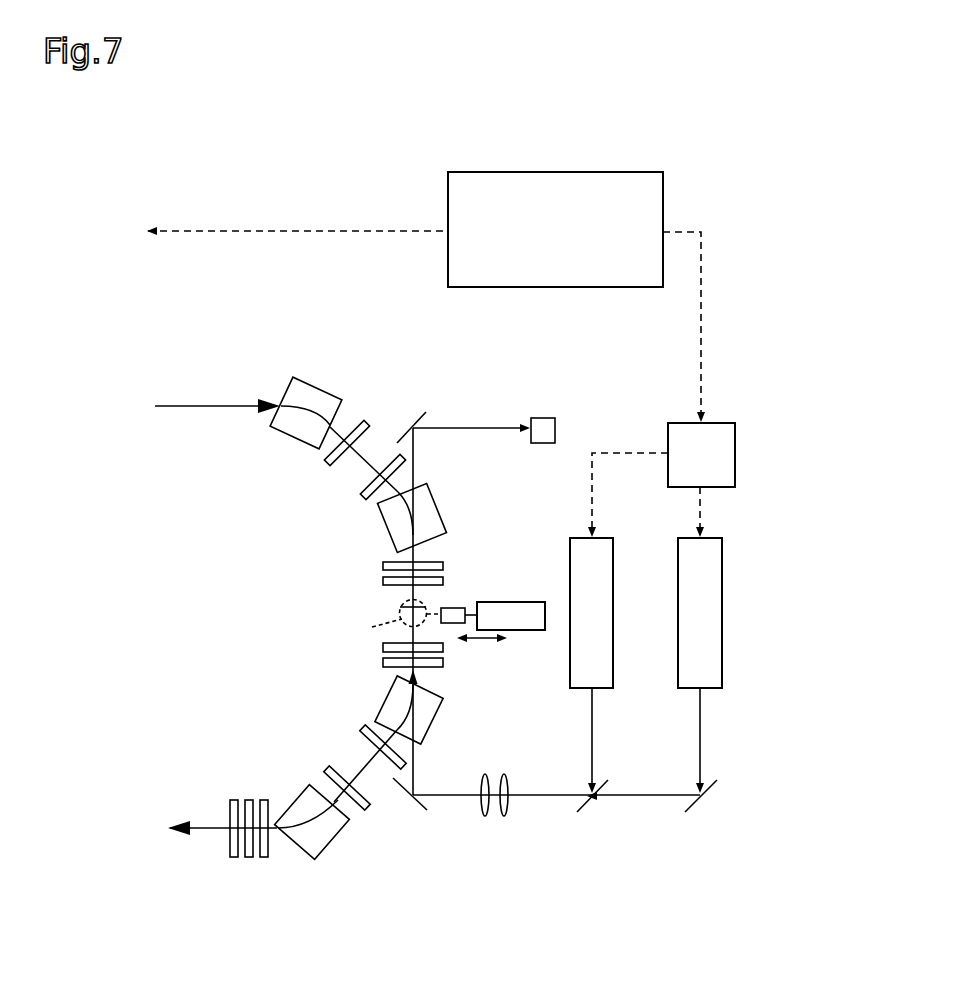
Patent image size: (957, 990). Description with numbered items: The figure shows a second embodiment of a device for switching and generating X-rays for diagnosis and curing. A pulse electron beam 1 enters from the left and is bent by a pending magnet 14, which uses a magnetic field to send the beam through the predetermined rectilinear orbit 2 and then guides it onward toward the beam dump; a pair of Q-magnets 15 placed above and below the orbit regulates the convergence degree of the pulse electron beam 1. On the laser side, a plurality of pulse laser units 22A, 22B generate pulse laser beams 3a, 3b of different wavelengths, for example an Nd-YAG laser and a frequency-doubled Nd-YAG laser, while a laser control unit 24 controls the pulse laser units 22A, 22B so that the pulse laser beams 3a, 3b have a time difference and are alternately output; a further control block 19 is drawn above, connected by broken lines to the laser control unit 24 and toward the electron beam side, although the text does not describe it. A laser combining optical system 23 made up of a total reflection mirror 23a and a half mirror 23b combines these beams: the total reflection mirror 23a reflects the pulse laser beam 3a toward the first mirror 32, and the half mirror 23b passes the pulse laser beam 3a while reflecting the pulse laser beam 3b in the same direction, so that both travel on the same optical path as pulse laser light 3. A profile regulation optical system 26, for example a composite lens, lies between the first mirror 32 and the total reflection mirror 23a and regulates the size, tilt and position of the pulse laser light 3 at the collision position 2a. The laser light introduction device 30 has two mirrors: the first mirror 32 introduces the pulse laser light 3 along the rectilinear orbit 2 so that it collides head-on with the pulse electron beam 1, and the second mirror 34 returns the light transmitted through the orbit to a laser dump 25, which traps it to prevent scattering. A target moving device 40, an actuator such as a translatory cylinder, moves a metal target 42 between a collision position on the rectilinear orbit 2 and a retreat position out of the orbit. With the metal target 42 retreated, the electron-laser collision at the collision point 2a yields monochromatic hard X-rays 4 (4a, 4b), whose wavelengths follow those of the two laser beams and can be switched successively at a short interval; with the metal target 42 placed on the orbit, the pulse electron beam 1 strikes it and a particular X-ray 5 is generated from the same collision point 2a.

The pulse electron beam 1 is at (212, 403).
The pending magnet 14 is at (312, 395).
The second mirror 34 is at (420, 418).
The laser dump 25 is at (538, 420).
The control unit 19 is at (564, 246).
The laser control unit 24 is at (723, 455).
The pulse laser unit 22B is at (605, 572).
The pulse laser unit 22A is at (713, 585).
The Q-magnets 15 is at (372, 565).
The collision position 2a is at (386, 609).
The rectilinear orbit 2 is at (410, 630).
The metal target 42 is at (453, 612).
The target moving device 40 is at (516, 586).
The monochromatic hard X-rays 4 is at (283, 641).
The monochromatic hard X-ray 4a is at (283, 641).
The monochromatic hard X-ray 4b is at (283, 641).
The particular X-ray 5 is at (362, 630).
The laser light introduction device 30 is at (365, 848).
The first mirror 32 is at (403, 790).
The pulse laser light 3 is at (430, 797).
The profile regulation optical system 26 is at (498, 829).
The pulse laser beam 3b is at (588, 740).
The pulse laser beam 3a is at (702, 742).
The laser combining optical system 23 is at (688, 844).
The half mirror 23b is at (582, 815).
The total reflection mirror 23a is at (688, 815).